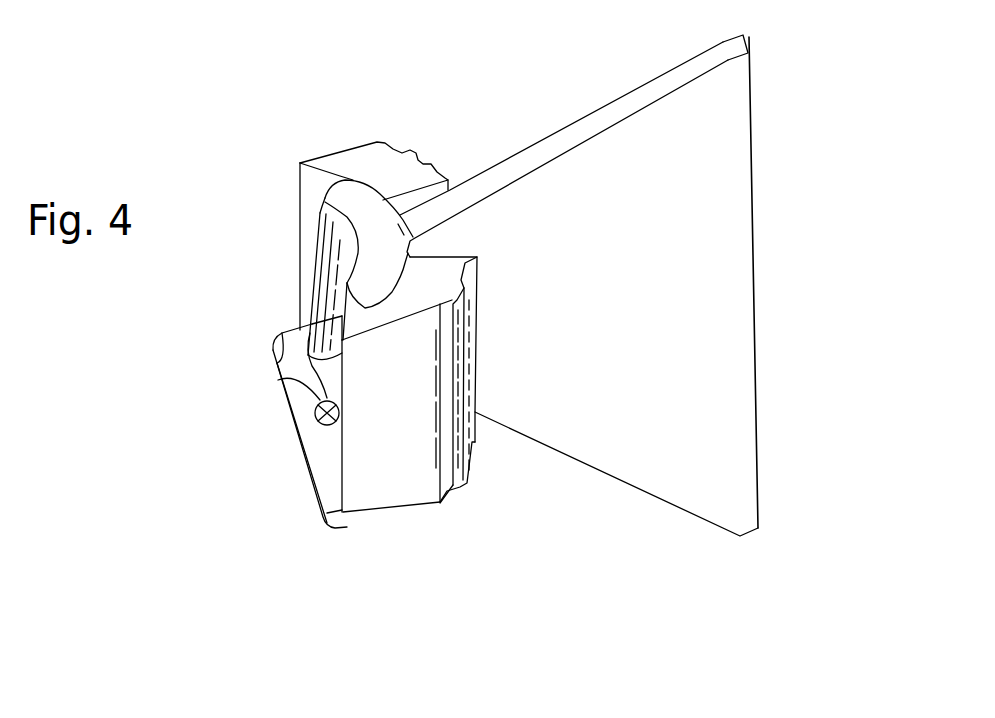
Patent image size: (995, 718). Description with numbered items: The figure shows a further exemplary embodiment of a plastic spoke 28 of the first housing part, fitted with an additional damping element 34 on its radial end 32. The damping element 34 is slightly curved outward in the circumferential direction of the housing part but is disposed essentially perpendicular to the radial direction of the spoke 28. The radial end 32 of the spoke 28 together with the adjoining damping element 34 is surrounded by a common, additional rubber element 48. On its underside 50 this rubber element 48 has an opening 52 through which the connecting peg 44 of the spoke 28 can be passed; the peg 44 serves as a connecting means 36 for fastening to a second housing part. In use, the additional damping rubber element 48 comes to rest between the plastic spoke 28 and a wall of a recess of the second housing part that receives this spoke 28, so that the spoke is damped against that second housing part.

The plastic spoke 28 is at (695, 343).
The radial end 32 is at (443, 242).
The damping element 34 is at (355, 198).
The connecting means 36 is at (337, 438).
The peg 44 is at (388, 322).
The rubber element 48 is at (392, 448).
The underside 50 is at (325, 475).
The opening 52 is at (328, 397).